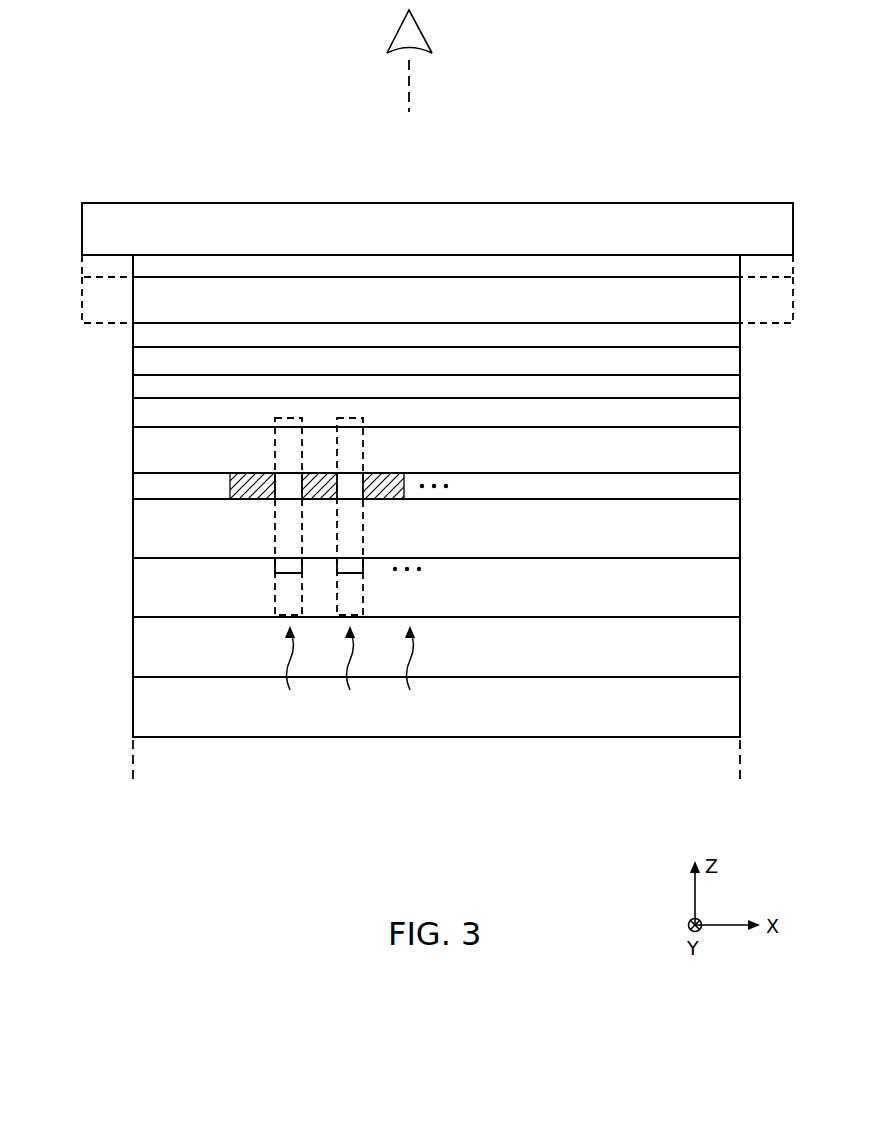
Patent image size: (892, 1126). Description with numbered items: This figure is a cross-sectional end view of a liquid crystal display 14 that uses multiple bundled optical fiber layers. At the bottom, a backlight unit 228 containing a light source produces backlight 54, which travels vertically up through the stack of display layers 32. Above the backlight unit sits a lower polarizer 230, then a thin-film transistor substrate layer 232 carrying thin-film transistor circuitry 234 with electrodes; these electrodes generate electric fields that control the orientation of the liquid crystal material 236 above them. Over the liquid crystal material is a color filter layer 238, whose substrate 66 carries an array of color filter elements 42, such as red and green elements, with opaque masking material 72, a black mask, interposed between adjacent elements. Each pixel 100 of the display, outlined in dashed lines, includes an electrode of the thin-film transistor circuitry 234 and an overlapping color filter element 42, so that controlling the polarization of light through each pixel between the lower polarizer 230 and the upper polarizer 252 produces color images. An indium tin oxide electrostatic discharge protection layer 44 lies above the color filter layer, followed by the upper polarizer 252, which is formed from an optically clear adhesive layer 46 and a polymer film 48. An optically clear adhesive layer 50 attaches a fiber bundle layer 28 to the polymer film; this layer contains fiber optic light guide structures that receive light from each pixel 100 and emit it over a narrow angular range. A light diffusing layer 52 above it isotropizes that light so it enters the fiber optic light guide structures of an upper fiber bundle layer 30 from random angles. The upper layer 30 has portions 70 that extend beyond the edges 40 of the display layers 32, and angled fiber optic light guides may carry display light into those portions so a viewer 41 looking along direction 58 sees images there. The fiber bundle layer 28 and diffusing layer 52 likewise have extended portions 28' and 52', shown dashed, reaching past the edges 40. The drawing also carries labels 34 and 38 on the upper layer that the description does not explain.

The display 14 is at (519, 88).
The viewer 41 is at (420, 30).
The viewing direction 58 is at (410, 86).
The extended portions of fiber bundle layer 70 is at (109, 188).
The cover layer edge 38 is at (82, 222).
The fiber bundle layer 30 is at (637, 222).
The outer surface 34 is at (525, 203).
The fiber bundle layer 28 is at (436, 237).
The light diffusing layer 52 is at (436, 214).
The extended portion of light diffusing layer 52' is at (436, 272).
The extended portion of fiber bundle layer 28' is at (436, 300).
The optically clear adhesive layer 50 is at (741, 332).
The upper polarizer 252 is at (82, 352).
The polymer film 48 is at (133, 352).
The optically clear adhesive layer 46 is at (133, 380).
The indium tin oxide electrostatic discharge protection layer 44 is at (133, 407).
The color filter layer 238 is at (82, 430).
The color filter layer substrate 66 is at (133, 443).
The display pixel 100 is at (283, 418).
The color filter element 42 is at (285, 473).
The opaque masking material 72 is at (260, 499).
The liquid crystal material 236 is at (133, 528).
The display layers 32 is at (760, 347).
The thin-film transistor substrate layer 232 is at (133, 588).
The thin-film transistor circuitry 234 is at (290, 573).
The lower polarizer 230 is at (133, 645).
The backlight 54 is at (352, 662).
The backlight unit 228 is at (133, 703).
The edges of display layers 40 is at (434, 778).